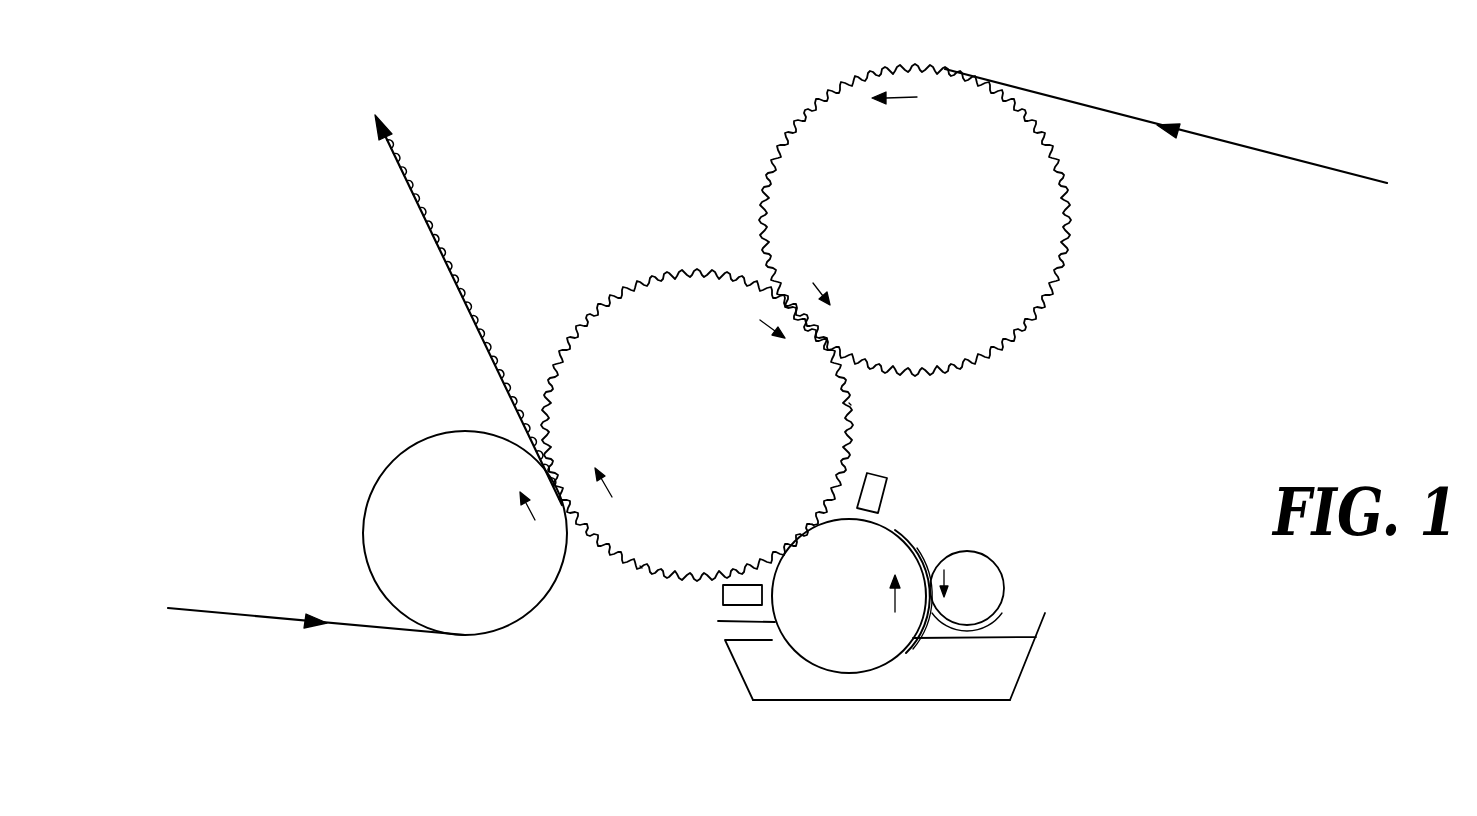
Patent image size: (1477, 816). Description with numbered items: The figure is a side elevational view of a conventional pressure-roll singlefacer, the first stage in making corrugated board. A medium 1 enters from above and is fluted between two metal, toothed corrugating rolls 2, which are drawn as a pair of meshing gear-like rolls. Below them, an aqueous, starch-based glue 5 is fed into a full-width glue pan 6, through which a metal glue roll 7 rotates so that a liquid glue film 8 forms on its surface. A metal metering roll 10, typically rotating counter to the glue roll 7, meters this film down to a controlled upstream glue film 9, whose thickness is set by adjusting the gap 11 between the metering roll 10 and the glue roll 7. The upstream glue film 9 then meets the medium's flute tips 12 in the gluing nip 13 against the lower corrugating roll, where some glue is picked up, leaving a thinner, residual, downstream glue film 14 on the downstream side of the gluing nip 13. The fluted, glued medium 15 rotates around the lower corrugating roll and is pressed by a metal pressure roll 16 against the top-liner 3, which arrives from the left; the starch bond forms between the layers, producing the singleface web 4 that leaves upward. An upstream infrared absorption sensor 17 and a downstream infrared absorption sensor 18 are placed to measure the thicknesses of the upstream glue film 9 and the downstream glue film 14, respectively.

The medium 1 is at (1257, 149).
The corrugating rolls 2 is at (655, 320).
The top-liner 3 is at (247, 613).
The singleface web 4 is at (432, 236).
The starch-based glue 5 is at (1044, 615).
The glue pan 6 is at (965, 700).
The glue roll 7 is at (882, 552).
The glue film 8 is at (1002, 613).
The upstream glue film 9 is at (908, 546).
The metering roll 10 is at (987, 570).
The gap 11 is at (920, 568).
The flute tips 12 is at (849, 403).
The gluing nip 13 is at (812, 524).
The downstream glue film 14 is at (720, 621).
The fluted, glued medium 15 is at (640, 566).
The pressure roll 16 is at (510, 603).
The upstream infrared absorption sensor 17 is at (873, 476).
The downstream infrared absorption sensor 18 is at (723, 594).